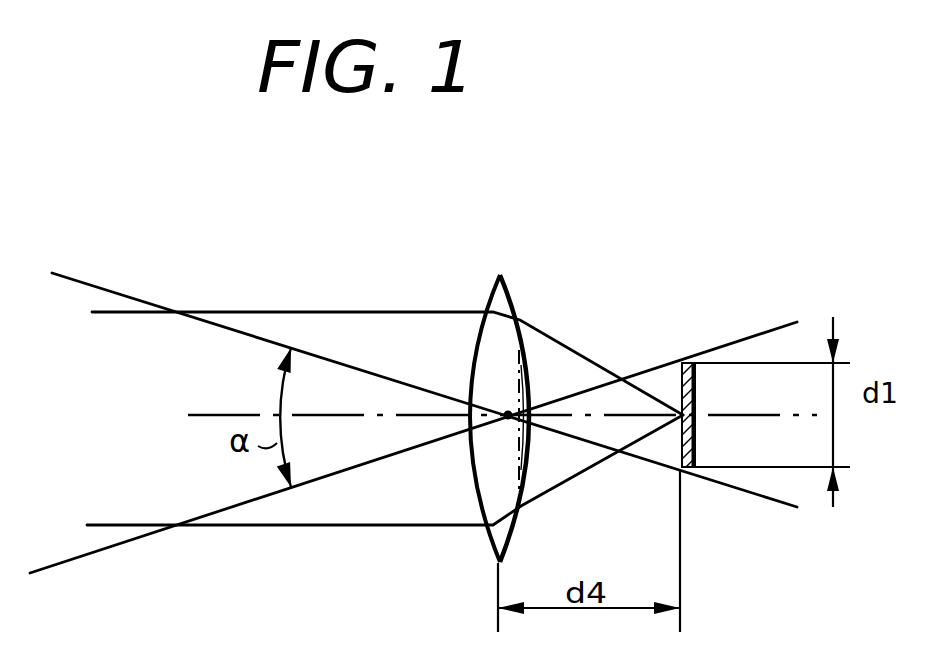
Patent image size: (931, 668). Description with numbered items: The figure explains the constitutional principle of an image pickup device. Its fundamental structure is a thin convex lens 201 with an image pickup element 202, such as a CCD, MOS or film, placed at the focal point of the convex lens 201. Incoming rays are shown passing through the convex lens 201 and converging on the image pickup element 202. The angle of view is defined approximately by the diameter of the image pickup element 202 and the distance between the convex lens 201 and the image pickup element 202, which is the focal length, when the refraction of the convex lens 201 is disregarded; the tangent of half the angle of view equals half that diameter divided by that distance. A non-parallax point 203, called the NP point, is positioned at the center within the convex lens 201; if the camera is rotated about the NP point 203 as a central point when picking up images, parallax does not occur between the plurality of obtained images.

The thin convex lens 201 is at (503, 330).
The image pickup element 202 is at (696, 390).
The NP point (non-parallax point) 203 is at (510, 420).